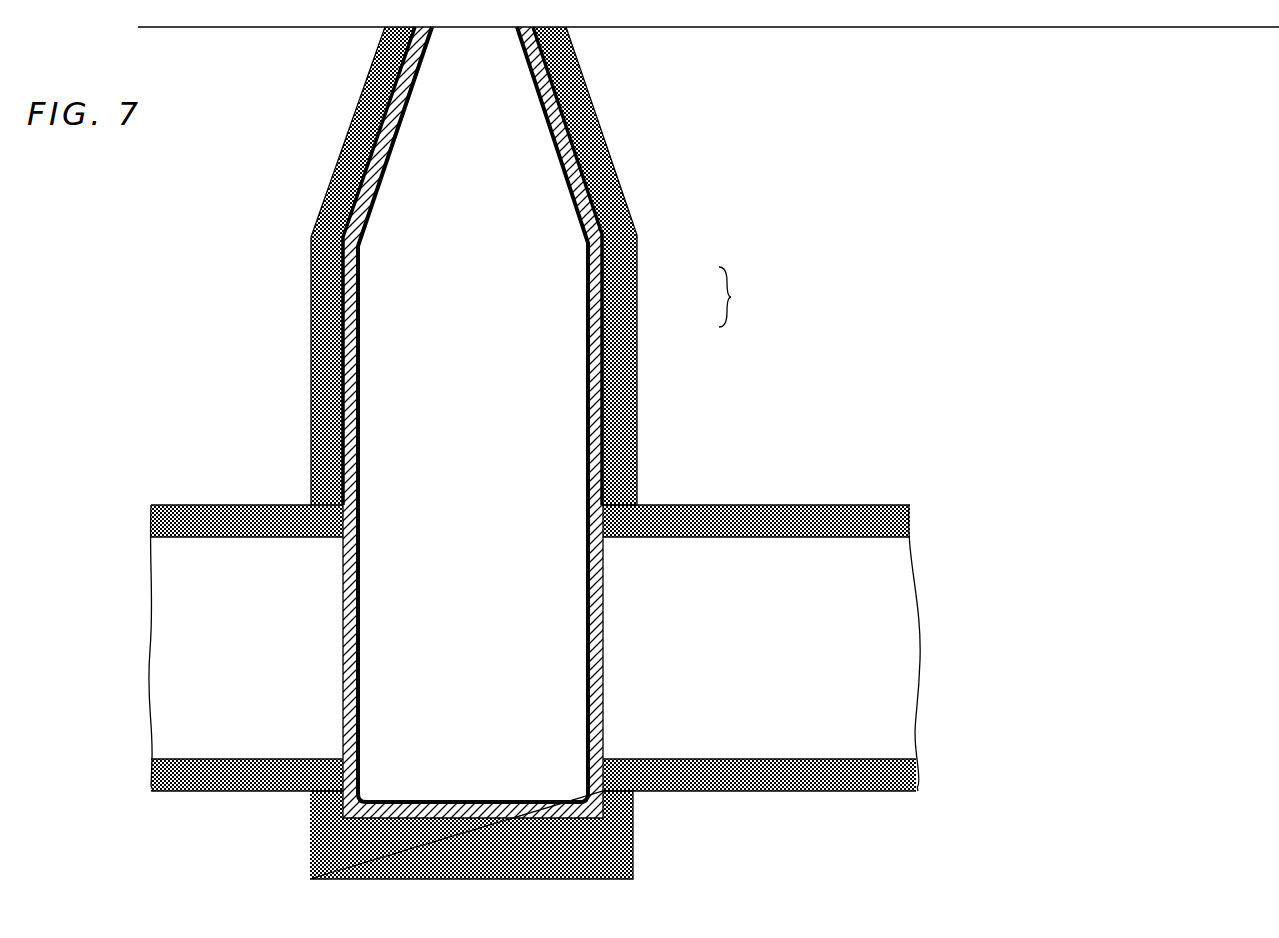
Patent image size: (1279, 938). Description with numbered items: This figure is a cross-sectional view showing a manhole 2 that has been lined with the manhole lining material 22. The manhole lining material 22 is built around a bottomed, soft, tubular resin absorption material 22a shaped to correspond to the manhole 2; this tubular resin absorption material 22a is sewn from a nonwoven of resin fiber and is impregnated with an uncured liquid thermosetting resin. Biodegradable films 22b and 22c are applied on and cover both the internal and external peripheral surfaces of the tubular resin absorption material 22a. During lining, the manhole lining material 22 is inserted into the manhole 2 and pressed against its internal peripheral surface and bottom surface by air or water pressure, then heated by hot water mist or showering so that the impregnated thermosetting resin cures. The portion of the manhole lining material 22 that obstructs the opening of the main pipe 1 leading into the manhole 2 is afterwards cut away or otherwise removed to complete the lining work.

The main pipe 1 is at (667, 518).
The manhole 2 is at (583, 136).
The manhole lining material 22 is at (593, 186).
The tubular resin absorption material 22a is at (596, 222).
The biodegradable film 22b is at (589, 290).
The biodegradable film 22c is at (604, 323).